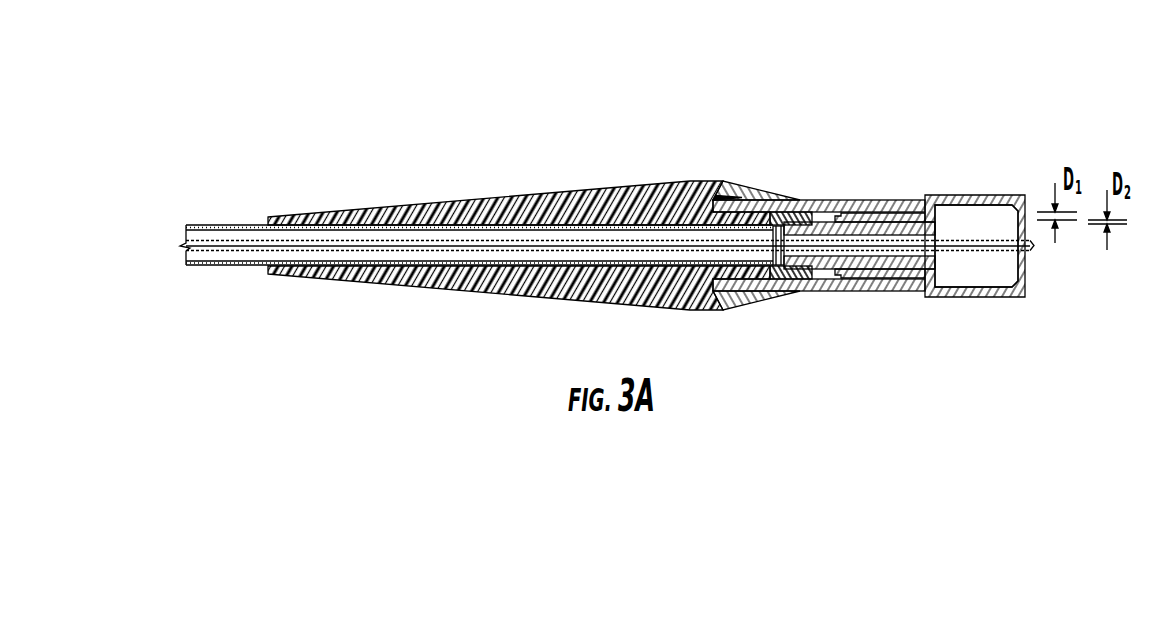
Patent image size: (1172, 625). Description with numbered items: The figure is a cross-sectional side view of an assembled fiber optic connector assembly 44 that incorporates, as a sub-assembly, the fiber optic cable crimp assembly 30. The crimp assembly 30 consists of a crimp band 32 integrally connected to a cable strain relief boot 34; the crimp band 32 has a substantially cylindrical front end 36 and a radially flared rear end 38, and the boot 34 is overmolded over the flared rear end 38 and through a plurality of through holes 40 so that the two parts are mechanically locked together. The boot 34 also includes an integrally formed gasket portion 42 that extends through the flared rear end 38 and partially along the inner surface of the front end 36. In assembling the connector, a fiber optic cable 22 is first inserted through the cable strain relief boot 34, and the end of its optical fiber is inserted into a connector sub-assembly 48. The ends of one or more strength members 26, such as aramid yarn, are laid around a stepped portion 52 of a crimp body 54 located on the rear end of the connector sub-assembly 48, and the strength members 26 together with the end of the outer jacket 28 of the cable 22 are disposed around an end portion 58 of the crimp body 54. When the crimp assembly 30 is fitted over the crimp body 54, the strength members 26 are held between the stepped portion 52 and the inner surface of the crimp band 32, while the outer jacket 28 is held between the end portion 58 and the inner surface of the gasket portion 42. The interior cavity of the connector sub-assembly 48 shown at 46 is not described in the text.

The fiber optic cable 22 is at (206, 224).
The strength members 26 is at (900, 279).
The outer jacket 28 is at (793, 266).
The fiber optic cable crimp assembly 30 is at (850, 190).
The crimp band 32 is at (805, 200).
The cable strain relief boot 34 is at (598, 184).
The front end 36 is at (889, 213).
The flared rear end 38 is at (746, 196).
The through holes 40 is at (722, 197).
The gasket portion 42 is at (784, 212).
The fiber optic connector assembly 44 is at (857, 71).
The hub lumen 46 is at (996, 212).
The connector sub-assembly 48 is at (940, 195).
The stepped portion 52 is at (854, 270).
The crimp body 54 is at (905, 291).
The end portion 58 is at (812, 279).